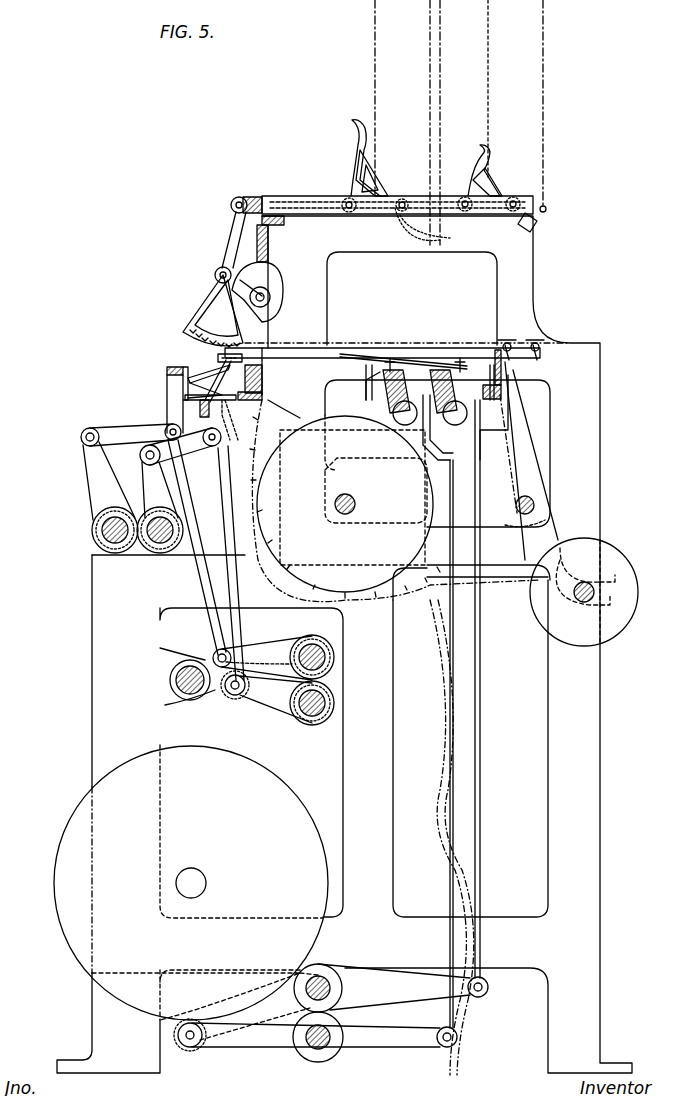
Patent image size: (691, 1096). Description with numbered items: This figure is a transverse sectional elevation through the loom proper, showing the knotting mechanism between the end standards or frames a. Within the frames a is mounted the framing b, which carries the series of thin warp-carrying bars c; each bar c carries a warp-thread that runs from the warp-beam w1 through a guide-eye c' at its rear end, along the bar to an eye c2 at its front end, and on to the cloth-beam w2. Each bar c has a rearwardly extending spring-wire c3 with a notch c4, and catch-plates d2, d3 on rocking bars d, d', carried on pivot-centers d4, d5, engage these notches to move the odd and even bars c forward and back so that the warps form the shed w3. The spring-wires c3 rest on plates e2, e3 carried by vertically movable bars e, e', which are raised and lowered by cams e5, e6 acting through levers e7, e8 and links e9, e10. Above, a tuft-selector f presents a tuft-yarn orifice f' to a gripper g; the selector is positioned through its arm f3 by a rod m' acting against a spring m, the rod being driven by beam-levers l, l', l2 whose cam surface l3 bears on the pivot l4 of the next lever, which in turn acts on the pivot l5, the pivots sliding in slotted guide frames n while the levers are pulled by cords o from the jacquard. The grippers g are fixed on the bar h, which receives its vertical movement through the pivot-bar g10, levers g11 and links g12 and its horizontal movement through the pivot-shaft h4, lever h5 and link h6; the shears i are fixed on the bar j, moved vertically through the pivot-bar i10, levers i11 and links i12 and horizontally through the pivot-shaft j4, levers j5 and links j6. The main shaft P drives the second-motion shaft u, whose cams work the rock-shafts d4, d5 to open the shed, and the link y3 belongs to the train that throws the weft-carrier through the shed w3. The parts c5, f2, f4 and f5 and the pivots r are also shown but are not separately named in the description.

The end standards a is at (344, 644).
The framing b is at (404, 718).
The warp-carrying bars c is at (397, 338).
The guide-eyes c' is at (526, 333).
The eyes or orifices c2 is at (218, 360).
The spring-wire c3 is at (459, 366).
The notch part c4 is at (392, 368).
The rod c5 is at (356, 370).
The rocking bar d is at (412, 392).
The rocking bar d' is at (438, 427).
The catch-plate d2 is at (382, 380).
The catch-plate d3 is at (436, 366).
The pivot-center d4 is at (404, 426).
The pivot-center d5 is at (468, 420).
The vertically-movable bar e is at (430, 416).
The vertically-movable bar e' is at (469, 418).
The plate e2 is at (412, 385).
The plate e3 is at (466, 385).
The cam e5 is at (80, 968).
The cam e6 is at (309, 974).
The lever e7 is at (307, 1035).
The lever e8 is at (382, 988).
The link e9 is at (450, 828).
The link e10 is at (480, 822).
The tuft-selector f is at (197, 310).
The tuft-orifice f' is at (206, 331).
The pivot f2 is at (215, 275).
The arm f3 is at (232, 228).
The cam f4 is at (268, 275).
The pivot f5 is at (270, 297).
The gripper g is at (210, 382).
The pivot-bar g10 is at (310, 716).
The levers g11 is at (266, 697).
The links g12 is at (240, 608).
The bar h is at (184, 398).
The pivot-shaft h4 is at (160, 542).
The lever h5 is at (160, 490).
The link h6 is at (192, 448).
The shears i is at (219, 381).
The pivot-bar i10 is at (312, 645).
The levers i11 is at (262, 658).
The links i12 is at (212, 628).
The bar j is at (166, 372).
The pivot-shaft j4 is at (100, 536).
The levers j5 is at (109, 481).
The links j6 is at (118, 432).
The beam-lever l is at (404, 226).
The beam-lever l' is at (459, 188).
The beam-lever l2 is at (416, 204).
The cam surface l3 is at (478, 160).
The center pivot l4 is at (466, 212).
The pivot center l5 is at (400, 212).
The spring m is at (274, 188).
The rod m' is at (267, 189).
The guide bars n is at (343, 215).
The cords o is at (437, 105).
The main shaft P is at (178, 680).
The pivots r is at (353, 215).
The second-motion shaft u is at (191, 883).
The warp-beam w1 is at (584, 592).
The cloth-beam w2 is at (345, 504).
The shed w3 is at (234, 364).
The link y3 is at (232, 420).